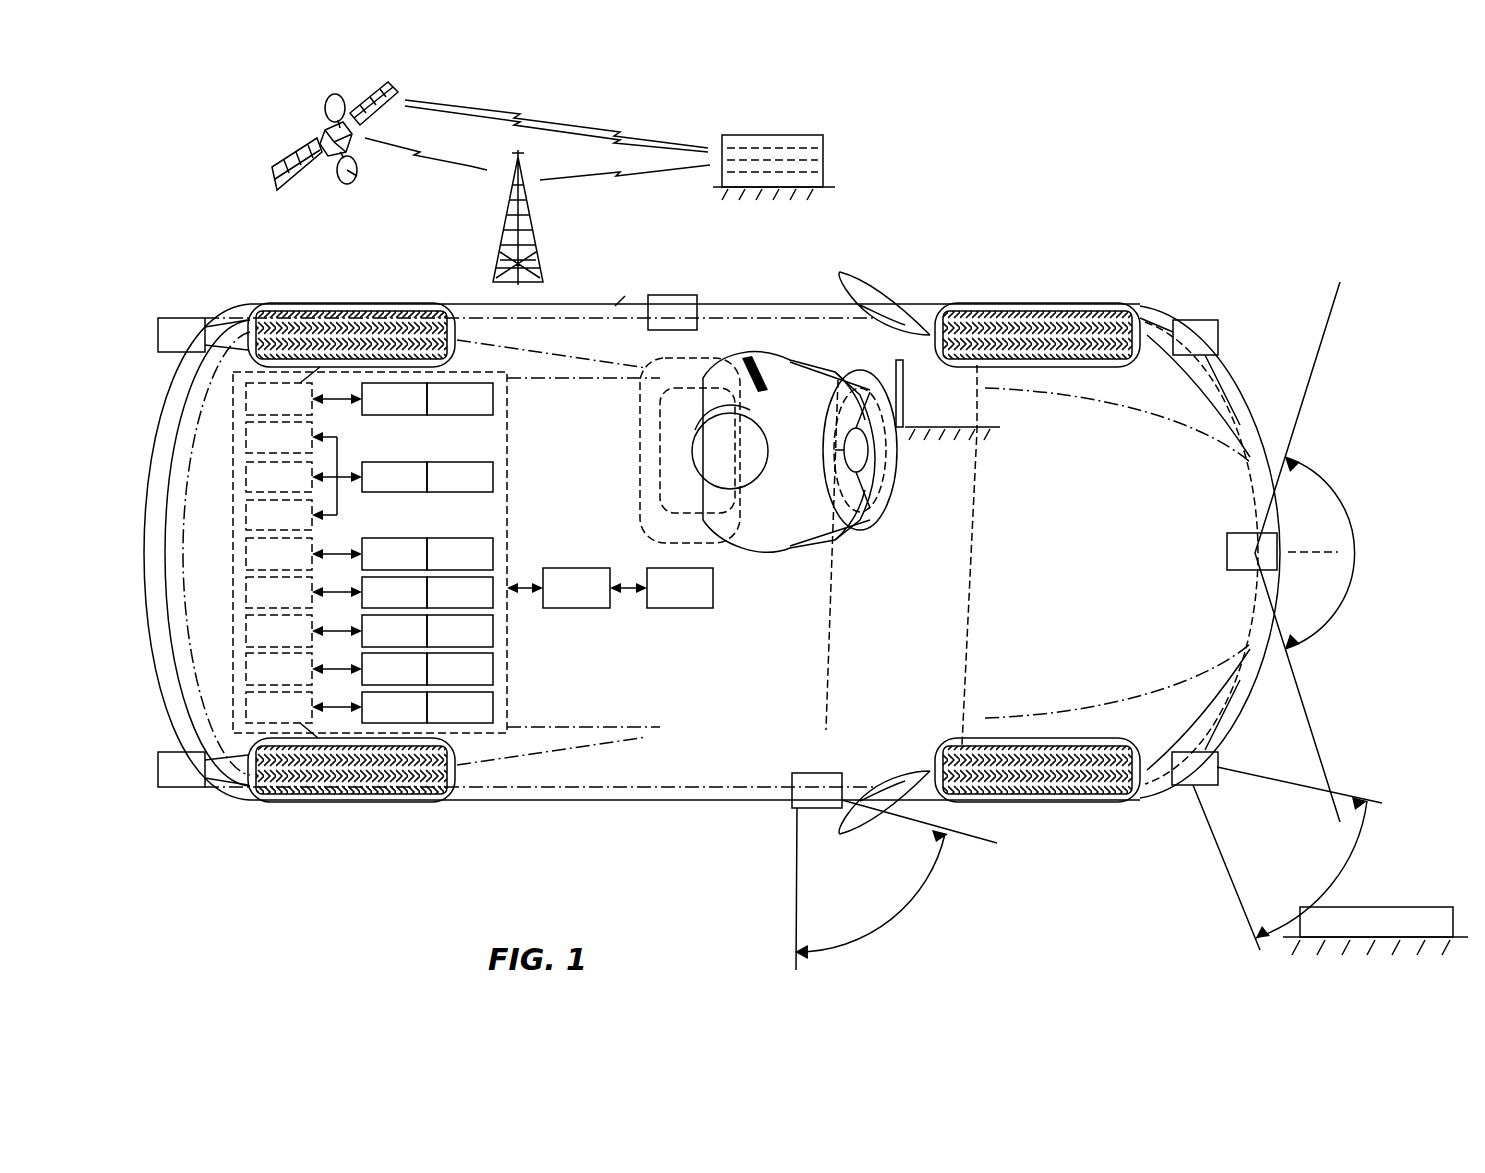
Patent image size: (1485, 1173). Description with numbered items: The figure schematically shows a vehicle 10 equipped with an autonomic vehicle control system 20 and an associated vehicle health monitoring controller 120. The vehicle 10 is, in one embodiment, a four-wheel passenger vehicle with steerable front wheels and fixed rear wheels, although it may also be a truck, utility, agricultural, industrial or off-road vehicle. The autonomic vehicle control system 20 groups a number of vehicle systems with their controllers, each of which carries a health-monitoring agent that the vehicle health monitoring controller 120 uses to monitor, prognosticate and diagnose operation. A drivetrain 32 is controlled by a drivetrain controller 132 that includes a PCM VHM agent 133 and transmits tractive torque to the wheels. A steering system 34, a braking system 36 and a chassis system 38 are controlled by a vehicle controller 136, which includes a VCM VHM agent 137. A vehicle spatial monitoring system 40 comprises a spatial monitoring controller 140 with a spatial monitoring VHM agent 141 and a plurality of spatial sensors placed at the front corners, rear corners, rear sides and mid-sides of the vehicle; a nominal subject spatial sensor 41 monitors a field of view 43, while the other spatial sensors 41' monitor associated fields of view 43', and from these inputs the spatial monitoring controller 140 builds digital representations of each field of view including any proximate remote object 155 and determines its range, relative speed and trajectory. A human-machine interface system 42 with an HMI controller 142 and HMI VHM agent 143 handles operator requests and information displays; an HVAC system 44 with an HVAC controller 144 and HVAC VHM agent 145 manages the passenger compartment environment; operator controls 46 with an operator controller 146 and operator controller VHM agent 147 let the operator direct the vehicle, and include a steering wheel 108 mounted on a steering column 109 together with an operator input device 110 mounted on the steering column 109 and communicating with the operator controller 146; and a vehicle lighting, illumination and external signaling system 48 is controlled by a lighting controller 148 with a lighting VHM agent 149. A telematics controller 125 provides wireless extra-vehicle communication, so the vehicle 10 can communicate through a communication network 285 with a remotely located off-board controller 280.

The vehicle 10 is at (212, 160).
The autonomic vehicle control system 20 is at (232, 546).
The drivetrain 32 is at (283, 392).
The steering system 34 is at (279, 437).
The braking system 36 is at (279, 477).
The chassis system 38 is at (279, 515).
The vehicle spatial monitoring system 40 is at (279, 554).
The spatial sensor 41 is at (1195, 769).
The spatial sensor 41' is at (717, 552).
The human-machine interface (HMI) system 42 is at (279, 592).
The field of view 43 is at (1303, 858).
The field of view 43' is at (1086, 626).
The HVAC system 44 is at (279, 631).
The operator controls 46 is at (279, 669).
The vehicle lighting, illumination and external signaling system 48 is at (282, 714).
The steering wheel 108 is at (893, 489).
The steering column 109 is at (910, 426).
The operator input device 110 is at (905, 389).
The vehicle health monitoring (VHM) controller 120 is at (576, 588).
The telematics controller 125 is at (680, 588).
The drivetrain controller (PCM) 132 is at (394, 399).
The PCM VHM agent 133 is at (460, 399).
The vehicle controller (VCM) 136 is at (394, 477).
The VCM VHM agent 137 is at (460, 477).
The spatial monitoring controller 140 is at (394, 554).
The spatial monitoring VHM agent 141 is at (460, 554).
The HMI controller 142 is at (394, 592).
The HMI VHM agent 143 is at (460, 592).
The HVAC controller 144 is at (394, 631).
The HVAC VHM agent 145 is at (460, 631).
The operator controller 146 is at (394, 669).
The operator controller VHM agent 147 is at (460, 669).
The lighting controller 148 is at (394, 707).
The lighting VHM agent 149 is at (460, 707).
The proximate remote object 155 is at (1427, 918).
The off-board controller 280 is at (832, 147).
The communication network 285 is at (437, 211).